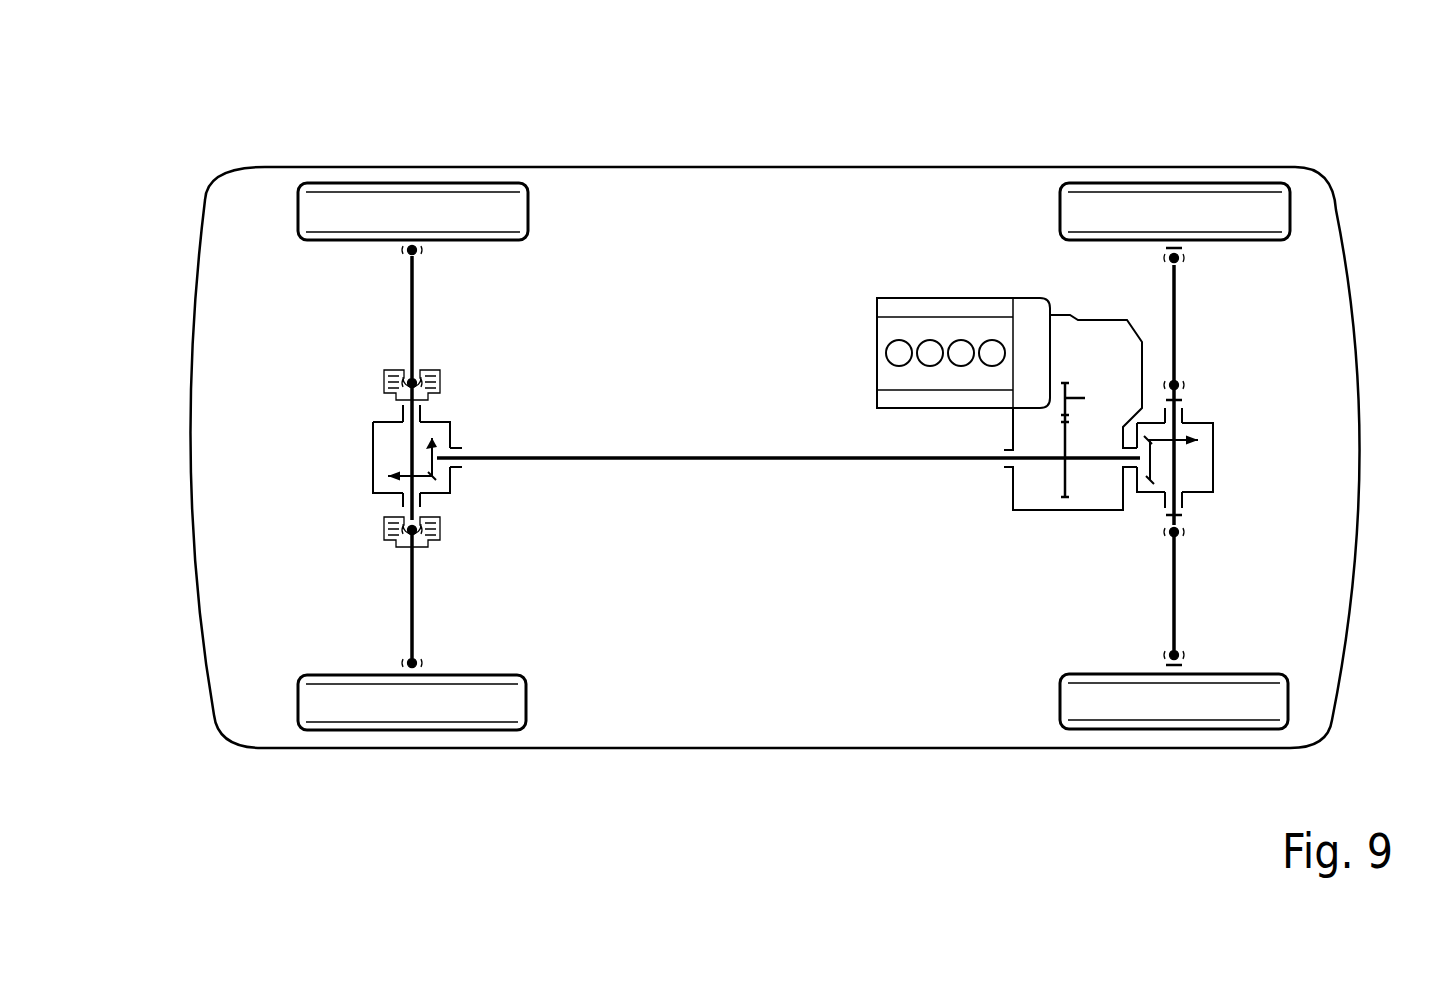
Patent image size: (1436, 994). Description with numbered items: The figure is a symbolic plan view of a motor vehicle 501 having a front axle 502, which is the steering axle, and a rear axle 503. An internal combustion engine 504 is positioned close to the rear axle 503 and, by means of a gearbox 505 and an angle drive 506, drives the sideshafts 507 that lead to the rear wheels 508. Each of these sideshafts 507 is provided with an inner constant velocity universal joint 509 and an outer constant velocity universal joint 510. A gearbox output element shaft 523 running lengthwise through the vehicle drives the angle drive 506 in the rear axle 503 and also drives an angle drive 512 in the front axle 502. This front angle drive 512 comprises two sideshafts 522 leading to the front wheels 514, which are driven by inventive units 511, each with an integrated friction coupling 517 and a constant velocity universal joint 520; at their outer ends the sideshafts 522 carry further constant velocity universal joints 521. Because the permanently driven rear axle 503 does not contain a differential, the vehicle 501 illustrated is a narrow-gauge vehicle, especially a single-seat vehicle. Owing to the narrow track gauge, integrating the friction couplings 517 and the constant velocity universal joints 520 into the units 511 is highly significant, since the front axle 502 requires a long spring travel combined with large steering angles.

The motor vehicle 501 is at (702, 148).
The front axle 502 is at (385, 295).
The rear axle 503 is at (1215, 283).
The internal combustion engine 504 is at (915, 308).
The gearbox 505 is at (1095, 345).
The angle drive 506 is at (1215, 452).
The sideshafts 507 is at (1178, 595).
The rear wheels 508 is at (1268, 703).
The inner constant velocity universal joint 509 is at (1182, 527).
The outer constant velocity universal joint 510 is at (1182, 646).
The inventive units 511 is at (350, 494).
The angle drive 512 is at (372, 440).
The front wheels 514 is at (313, 703).
The friction coupling 517 is at (383, 528).
The constant velocity universal joint 520 is at (410, 543).
The further constant velocity universal joints 521 is at (404, 660).
The sideshafts 522 is at (410, 618).
The gearbox output element shaft 523 is at (648, 455).